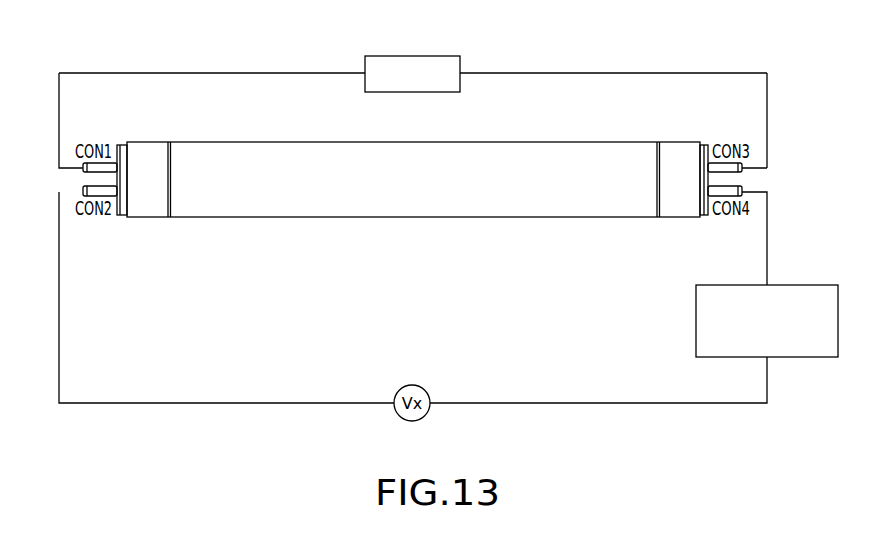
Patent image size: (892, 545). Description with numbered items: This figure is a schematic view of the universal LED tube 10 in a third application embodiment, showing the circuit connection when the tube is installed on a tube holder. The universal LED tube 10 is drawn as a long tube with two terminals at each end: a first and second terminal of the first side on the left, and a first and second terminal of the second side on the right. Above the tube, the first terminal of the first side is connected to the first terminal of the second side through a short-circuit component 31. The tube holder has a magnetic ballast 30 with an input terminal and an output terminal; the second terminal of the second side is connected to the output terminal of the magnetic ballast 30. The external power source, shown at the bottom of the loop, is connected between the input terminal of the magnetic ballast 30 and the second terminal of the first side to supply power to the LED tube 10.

The universal LED tube 10 is at (412, 147).
The short-circuit component 31 is at (412, 63).
The magnetic ballast 30 is at (757, 292).